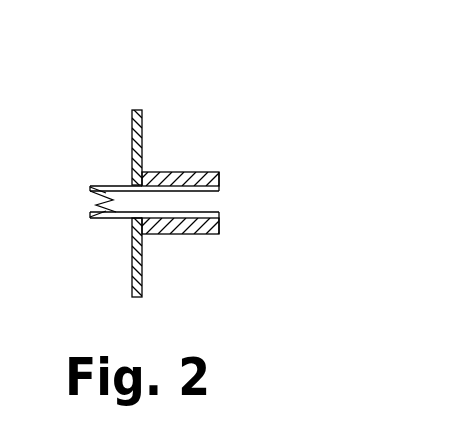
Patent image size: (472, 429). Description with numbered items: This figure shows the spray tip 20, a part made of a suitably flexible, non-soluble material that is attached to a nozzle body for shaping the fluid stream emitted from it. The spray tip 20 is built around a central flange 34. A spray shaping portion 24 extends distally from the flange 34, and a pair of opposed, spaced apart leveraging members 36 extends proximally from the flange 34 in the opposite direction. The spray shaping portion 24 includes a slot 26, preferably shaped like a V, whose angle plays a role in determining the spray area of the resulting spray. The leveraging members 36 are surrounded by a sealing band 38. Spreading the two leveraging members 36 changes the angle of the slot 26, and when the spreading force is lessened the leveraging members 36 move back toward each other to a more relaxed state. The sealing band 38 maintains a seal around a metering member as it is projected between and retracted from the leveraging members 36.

The spray tip 20 is at (263, 89).
The spray shaping portion 24 is at (110, 170).
The slot 26 is at (93, 199).
The flange 34 is at (137, 110).
The leveraging members 36 is at (220, 206).
The sealing band 38 is at (197, 172).